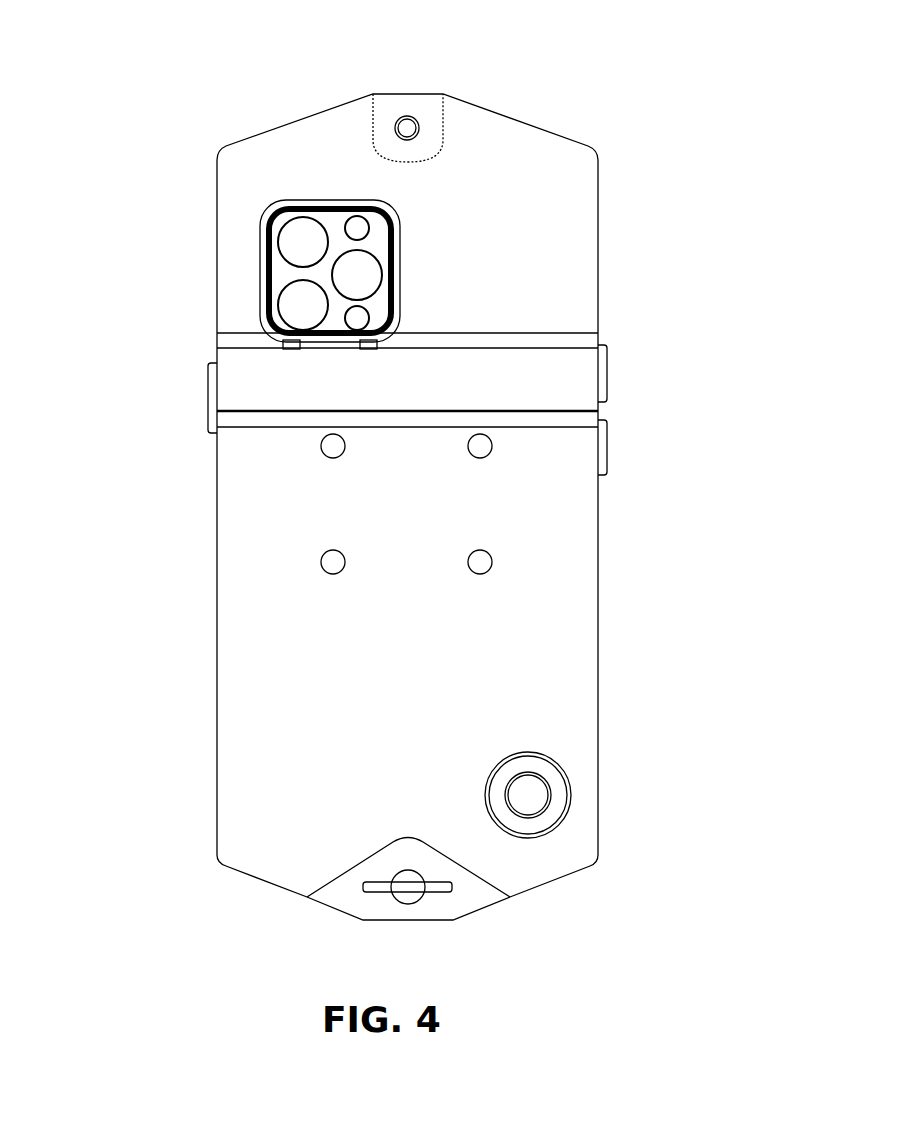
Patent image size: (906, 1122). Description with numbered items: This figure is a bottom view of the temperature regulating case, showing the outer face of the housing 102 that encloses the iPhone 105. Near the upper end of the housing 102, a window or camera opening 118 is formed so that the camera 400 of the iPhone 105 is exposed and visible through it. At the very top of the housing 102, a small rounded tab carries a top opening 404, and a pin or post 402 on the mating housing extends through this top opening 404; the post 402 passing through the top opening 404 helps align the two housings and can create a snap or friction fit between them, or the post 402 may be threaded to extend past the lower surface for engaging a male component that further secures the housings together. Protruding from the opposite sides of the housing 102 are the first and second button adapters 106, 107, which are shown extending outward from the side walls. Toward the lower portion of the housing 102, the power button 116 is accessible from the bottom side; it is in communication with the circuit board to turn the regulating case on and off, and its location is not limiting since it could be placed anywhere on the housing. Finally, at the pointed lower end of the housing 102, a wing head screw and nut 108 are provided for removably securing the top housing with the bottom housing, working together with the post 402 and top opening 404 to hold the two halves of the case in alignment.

The housing 102 is at (503, 148).
The iPhone 105 is at (380, 303).
The first button adapter 106 is at (615, 455).
The second button adapter 107 is at (212, 408).
The wing head screw and nut 108 is at (408, 900).
The power button 116 is at (550, 793).
The camera opening 118 is at (275, 222).
The camera 400 is at (388, 212).
The post 402 is at (412, 118).
The top opening 404 is at (397, 122).